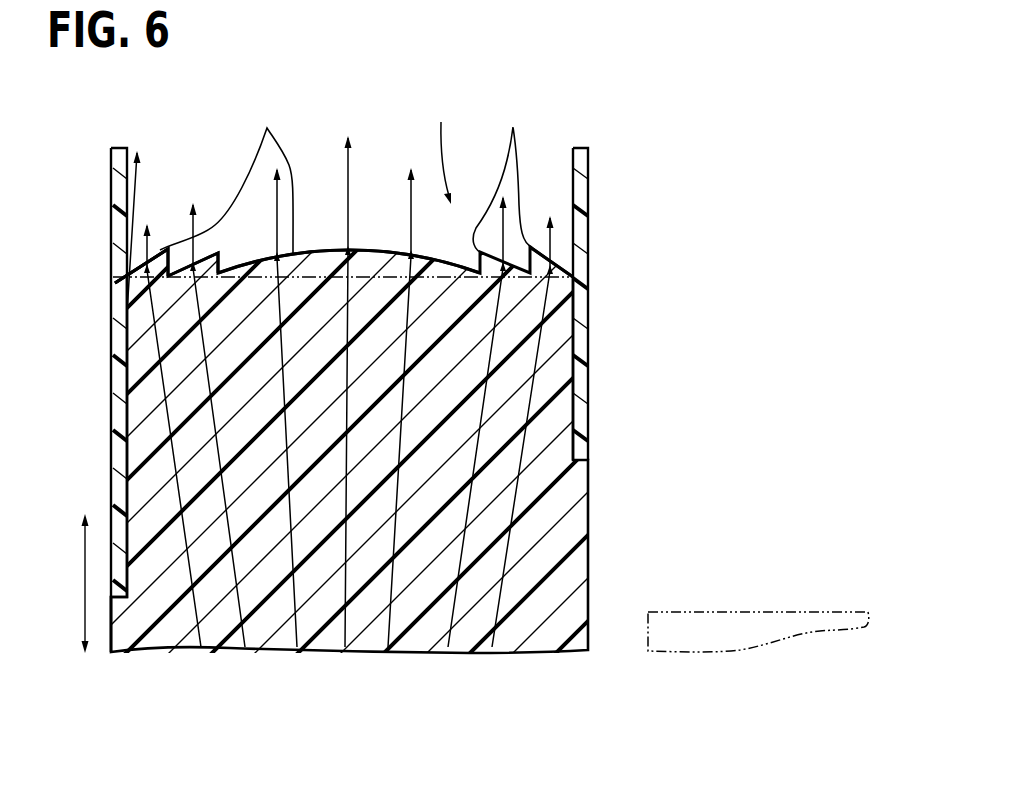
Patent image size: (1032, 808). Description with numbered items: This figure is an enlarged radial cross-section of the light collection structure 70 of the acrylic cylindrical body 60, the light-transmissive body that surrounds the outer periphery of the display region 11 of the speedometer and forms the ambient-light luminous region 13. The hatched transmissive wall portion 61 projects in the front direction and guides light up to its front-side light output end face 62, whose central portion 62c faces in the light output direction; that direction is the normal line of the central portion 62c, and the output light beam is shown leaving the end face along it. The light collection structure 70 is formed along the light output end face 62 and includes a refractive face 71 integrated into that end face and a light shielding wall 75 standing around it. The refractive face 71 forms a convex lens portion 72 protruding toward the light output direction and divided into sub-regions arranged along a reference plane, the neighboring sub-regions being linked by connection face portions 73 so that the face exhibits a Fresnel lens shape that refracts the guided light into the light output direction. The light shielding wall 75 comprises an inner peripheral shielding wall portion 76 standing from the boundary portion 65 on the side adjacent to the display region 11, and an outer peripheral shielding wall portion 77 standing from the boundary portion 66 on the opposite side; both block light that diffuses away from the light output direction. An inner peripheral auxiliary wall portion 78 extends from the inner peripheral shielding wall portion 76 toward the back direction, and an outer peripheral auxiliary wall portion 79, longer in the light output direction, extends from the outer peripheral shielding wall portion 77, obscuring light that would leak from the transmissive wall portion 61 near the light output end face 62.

The display region 11 is at (773, 611).
The ambient-light luminous region 13 is at (440, 150).
The acrylic cylindrical body 60 is at (489, 445).
The transmissive wall portion 61 is at (588, 524).
The light output end face 62 is at (557, 262).
The central portion 62c is at (344, 251).
The boundary portion 65 is at (573, 276).
The boundary portion 66 is at (113, 281).
The light collection structure 70 is at (166, 172).
The refractive face 71 is at (153, 253).
The convex lens portion 72 is at (226, 175).
The connection face portion 73 is at (502, 175).
The light shielding wall 75 is at (127, 150).
The inner peripheral shielding wall portion 76 is at (600, 287).
The outer peripheral shielding wall portion 77 is at (100, 383).
The inner peripheral auxiliary wall portion 78 is at (575, 321).
The outer peripheral auxiliary wall portion 79 is at (112, 415).